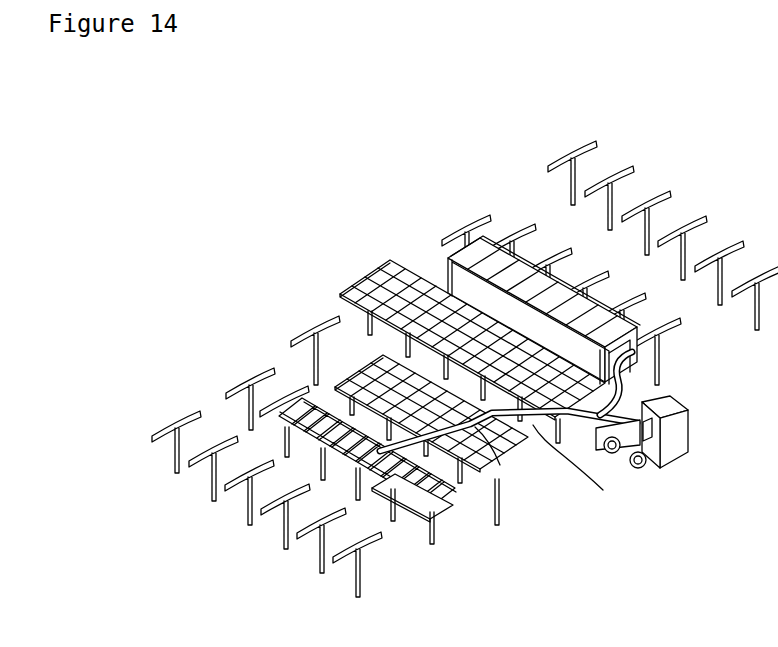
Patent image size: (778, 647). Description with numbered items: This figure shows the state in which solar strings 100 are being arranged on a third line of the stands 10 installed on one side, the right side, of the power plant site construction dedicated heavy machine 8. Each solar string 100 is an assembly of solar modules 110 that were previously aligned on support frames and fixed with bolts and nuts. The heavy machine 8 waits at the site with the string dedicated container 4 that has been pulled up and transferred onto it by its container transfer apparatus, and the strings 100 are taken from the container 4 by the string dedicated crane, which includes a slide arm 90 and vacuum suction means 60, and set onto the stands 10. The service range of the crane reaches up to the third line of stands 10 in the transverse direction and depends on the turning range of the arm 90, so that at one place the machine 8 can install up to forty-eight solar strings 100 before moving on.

The string dedicated container 4 is at (443, 270).
The power plant site construction dedicated heavy machine 8 is at (658, 394).
The stand 10 is at (585, 142).
The vacuum suction means 60 is at (390, 533).
The slide arm 90 is at (535, 425).
The solar string 100 is at (388, 268).
The solar module 110 is at (468, 448).